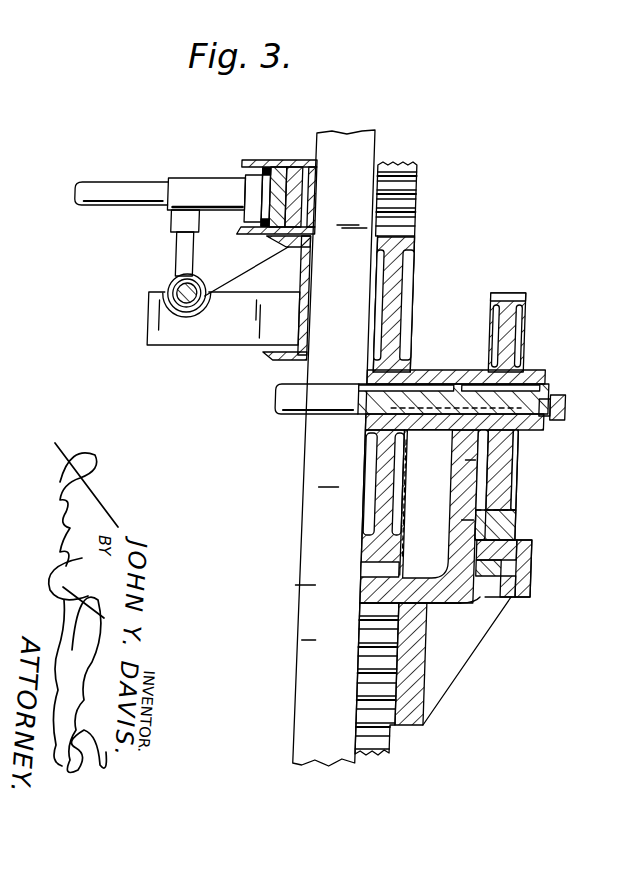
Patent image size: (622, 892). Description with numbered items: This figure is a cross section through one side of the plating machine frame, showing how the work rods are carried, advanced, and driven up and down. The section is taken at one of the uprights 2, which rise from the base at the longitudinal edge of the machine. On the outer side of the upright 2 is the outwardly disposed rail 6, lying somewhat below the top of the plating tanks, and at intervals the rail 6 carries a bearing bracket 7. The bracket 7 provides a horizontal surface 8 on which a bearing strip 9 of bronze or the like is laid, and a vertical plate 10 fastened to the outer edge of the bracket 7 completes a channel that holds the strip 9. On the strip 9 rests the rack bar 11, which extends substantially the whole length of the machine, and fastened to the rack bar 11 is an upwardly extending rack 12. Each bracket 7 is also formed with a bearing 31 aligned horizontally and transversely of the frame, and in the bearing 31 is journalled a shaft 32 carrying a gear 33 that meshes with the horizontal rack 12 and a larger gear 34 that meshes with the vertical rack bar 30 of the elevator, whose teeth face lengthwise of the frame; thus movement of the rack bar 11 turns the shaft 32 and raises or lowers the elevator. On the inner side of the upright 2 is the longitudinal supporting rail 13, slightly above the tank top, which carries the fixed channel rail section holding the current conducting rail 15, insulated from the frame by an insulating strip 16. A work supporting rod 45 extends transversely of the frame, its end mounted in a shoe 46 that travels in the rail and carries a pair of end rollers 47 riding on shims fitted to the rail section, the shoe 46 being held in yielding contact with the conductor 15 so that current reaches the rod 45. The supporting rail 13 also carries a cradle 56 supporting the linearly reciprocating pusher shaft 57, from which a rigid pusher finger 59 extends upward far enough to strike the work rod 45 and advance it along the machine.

The upright 2 is at (338, 485).
The rail 6 is at (374, 665).
The bearing bracket 7 is at (475, 610).
The horizontal surface 8 is at (523, 596).
The bearing strip 9 is at (514, 567).
The vertical plate 10 is at (544, 560).
The rack bar 11 is at (528, 545).
The rack 12 is at (526, 520).
The supporting rail 13 is at (284, 355).
The current conducting rail 15 is at (283, 175).
The insulating strip 16 is at (309, 162).
The vertical rack bar 30 is at (401, 232).
The bearing 31 is at (463, 372).
The shaft 32 is at (287, 400).
The gear 33 is at (516, 322).
The larger gear 34 is at (398, 288).
The work supporting rod 45 is at (112, 190).
The shoe 46 is at (215, 193).
The end roller 47 is at (264, 170).
The cradle 56 is at (199, 333).
The pusher shaft 57 is at (205, 281).
The pusher finger 59 is at (188, 243).